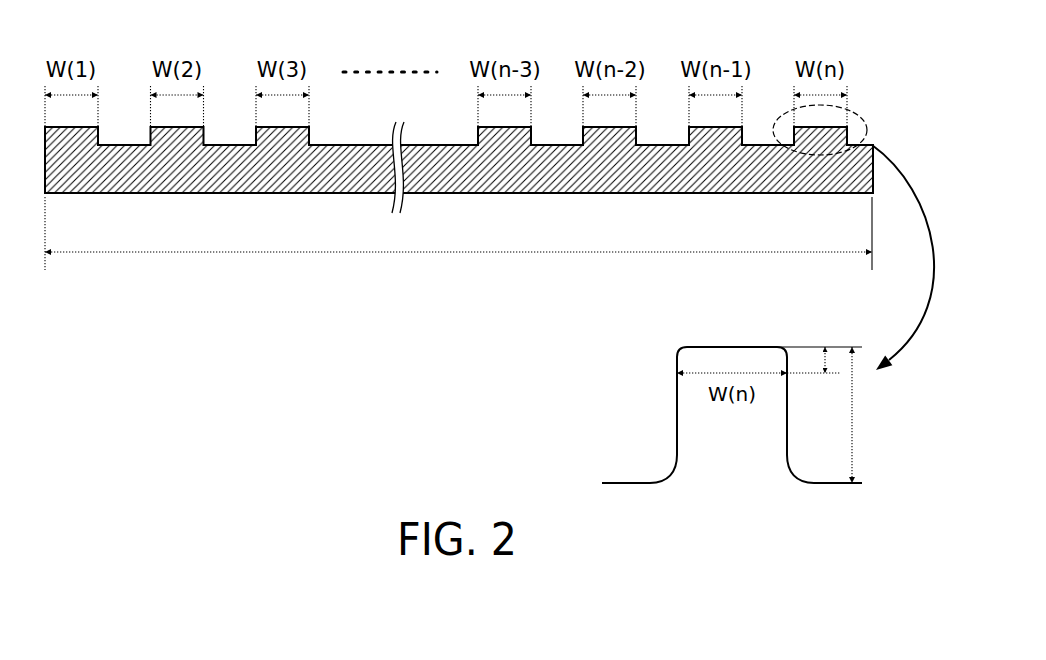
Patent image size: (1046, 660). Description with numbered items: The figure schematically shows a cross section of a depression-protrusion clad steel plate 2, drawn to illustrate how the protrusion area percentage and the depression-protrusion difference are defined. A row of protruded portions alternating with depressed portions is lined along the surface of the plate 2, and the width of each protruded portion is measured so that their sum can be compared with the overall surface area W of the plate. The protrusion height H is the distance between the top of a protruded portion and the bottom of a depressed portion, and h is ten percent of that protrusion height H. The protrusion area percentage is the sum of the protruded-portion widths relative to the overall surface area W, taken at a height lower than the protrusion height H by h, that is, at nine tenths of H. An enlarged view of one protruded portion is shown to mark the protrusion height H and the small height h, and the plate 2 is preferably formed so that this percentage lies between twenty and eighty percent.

The depression-protrusion clad steel plate 2 is at (880, 133).
The overall surface area W is at (458, 233).
The protrusion height H is at (839, 415).
The ten percent of protrusion height h is at (818, 362).